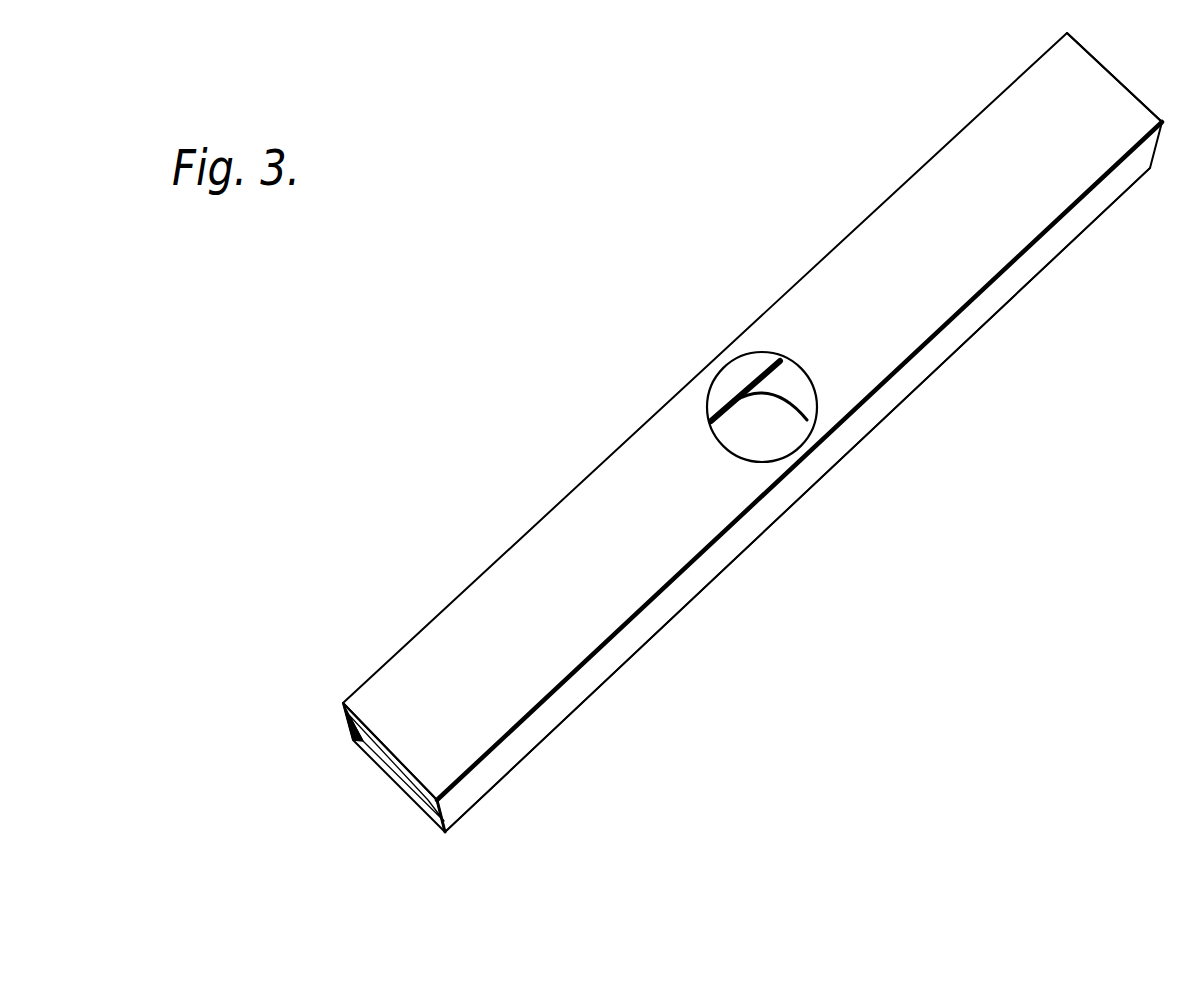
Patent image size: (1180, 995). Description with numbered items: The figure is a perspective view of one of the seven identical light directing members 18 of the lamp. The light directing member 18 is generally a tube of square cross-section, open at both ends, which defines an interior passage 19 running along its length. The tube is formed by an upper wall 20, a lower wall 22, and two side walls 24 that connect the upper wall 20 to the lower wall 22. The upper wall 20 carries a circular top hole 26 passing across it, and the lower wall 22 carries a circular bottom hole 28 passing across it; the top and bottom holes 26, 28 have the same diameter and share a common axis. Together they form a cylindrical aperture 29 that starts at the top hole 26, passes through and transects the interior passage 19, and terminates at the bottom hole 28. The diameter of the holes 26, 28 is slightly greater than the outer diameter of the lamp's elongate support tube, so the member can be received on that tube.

The light directing member 18 is at (990, 342).
The interior passage 19 is at (397, 775).
The upper wall 20 is at (1035, 206).
The lower wall 22 is at (425, 800).
The side wall 24 is at (632, 637).
The top hole 26 is at (740, 372).
The bottom hole 28 is at (793, 410).
The cylindrical aperture 29 is at (752, 420).